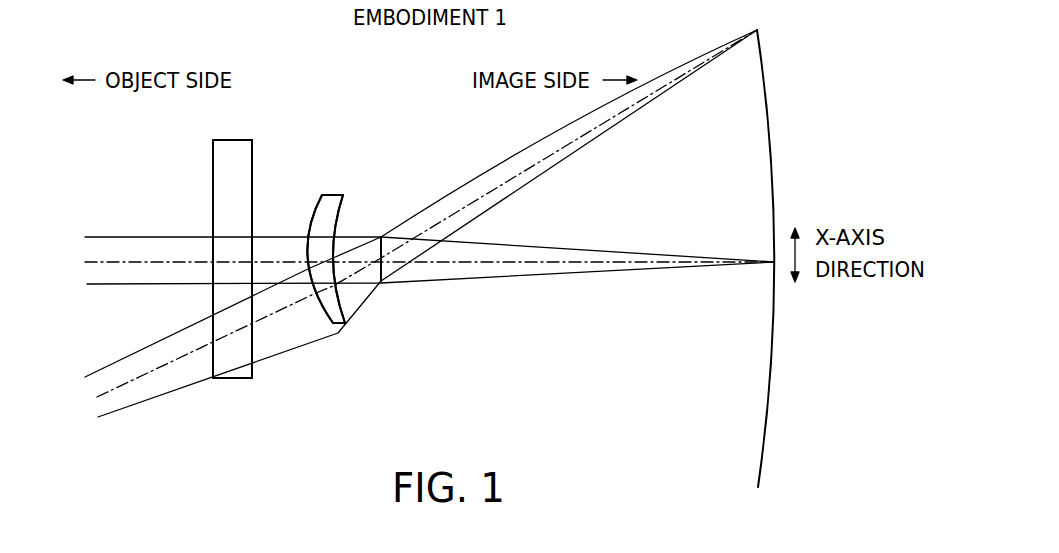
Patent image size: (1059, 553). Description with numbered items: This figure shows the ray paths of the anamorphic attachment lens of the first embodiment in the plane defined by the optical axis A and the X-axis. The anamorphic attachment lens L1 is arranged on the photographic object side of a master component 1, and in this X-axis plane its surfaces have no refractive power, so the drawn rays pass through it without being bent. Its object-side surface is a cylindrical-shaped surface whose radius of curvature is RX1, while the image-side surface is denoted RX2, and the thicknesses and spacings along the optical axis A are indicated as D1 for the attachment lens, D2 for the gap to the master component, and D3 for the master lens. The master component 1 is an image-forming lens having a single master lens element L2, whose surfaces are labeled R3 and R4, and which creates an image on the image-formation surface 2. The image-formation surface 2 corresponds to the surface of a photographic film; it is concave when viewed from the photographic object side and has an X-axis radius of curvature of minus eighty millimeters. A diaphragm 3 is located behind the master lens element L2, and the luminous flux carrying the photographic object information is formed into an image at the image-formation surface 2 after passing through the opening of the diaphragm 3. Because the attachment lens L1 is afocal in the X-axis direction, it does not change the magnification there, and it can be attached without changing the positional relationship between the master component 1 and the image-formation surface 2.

The master component 1 is at (348, 410).
The image-formation surface 2 is at (773, 325).
The diaphragm 3 is at (386, 291).
The optical axis A is at (110, 262).
The anamorphic attachment lens L1 is at (237, 382).
The master lens element L2 is at (338, 326).
The radius of curvature of the object-side cylindrical surface RX1 is at (213, 160).
The image-side surface of first lens RX2 is at (253, 160).
The object-side surface of second lens R3 is at (322, 197).
The image-side surface of second lens R4 is at (343, 210).
The thickness of first lens D1 is at (228, 262).
The air gap between first and second lens D2 is at (277, 262).
The thickness of second lens D3 is at (322, 258).